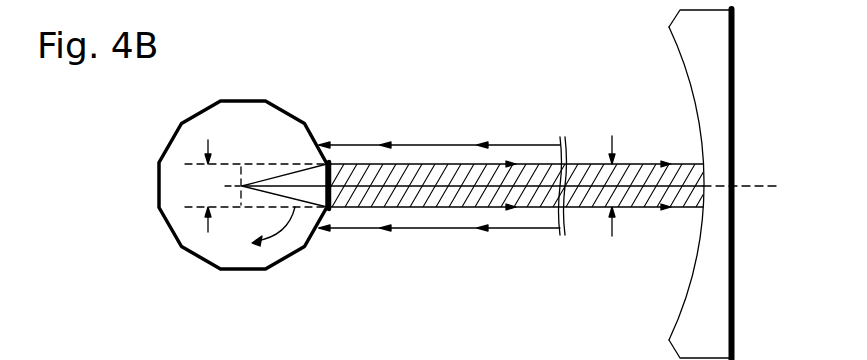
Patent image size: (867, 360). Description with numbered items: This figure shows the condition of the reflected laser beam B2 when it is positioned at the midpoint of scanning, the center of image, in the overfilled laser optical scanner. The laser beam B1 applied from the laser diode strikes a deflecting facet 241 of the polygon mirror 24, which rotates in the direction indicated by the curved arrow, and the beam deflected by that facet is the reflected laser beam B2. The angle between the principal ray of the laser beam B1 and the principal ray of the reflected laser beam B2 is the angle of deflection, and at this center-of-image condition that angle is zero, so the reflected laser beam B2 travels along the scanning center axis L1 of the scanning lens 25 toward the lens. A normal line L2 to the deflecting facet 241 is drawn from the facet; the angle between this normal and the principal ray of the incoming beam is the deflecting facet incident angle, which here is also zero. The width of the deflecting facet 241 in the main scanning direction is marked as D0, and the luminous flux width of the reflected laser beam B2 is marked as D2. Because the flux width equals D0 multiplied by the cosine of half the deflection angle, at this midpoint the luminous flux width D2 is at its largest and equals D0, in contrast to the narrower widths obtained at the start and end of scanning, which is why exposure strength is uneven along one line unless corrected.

The polygon mirror 24 is at (192, 251).
The scanning lens 25 is at (735, 47).
The deflecting facet 241 is at (332, 174).
The scanning center axis L1 is at (752, 188).
The normal line L2 is at (292, 185).
The laser beam B1 is at (438, 222).
The reflected laser beam B2 is at (526, 170).
The width of the deflecting facet D0 is at (257, 186).
The luminous flux width D2 is at (613, 186).